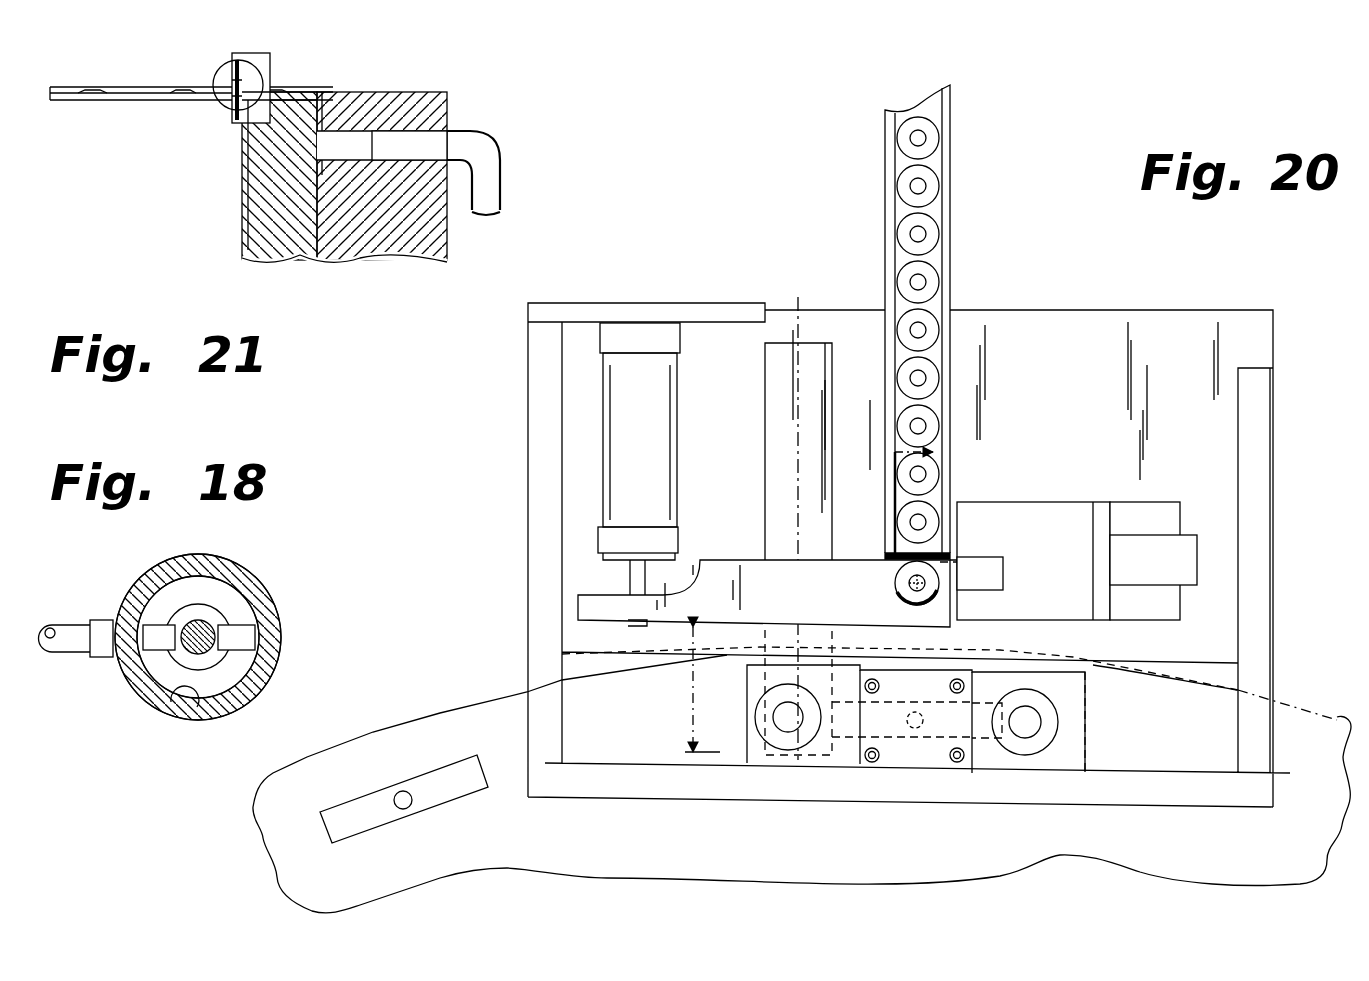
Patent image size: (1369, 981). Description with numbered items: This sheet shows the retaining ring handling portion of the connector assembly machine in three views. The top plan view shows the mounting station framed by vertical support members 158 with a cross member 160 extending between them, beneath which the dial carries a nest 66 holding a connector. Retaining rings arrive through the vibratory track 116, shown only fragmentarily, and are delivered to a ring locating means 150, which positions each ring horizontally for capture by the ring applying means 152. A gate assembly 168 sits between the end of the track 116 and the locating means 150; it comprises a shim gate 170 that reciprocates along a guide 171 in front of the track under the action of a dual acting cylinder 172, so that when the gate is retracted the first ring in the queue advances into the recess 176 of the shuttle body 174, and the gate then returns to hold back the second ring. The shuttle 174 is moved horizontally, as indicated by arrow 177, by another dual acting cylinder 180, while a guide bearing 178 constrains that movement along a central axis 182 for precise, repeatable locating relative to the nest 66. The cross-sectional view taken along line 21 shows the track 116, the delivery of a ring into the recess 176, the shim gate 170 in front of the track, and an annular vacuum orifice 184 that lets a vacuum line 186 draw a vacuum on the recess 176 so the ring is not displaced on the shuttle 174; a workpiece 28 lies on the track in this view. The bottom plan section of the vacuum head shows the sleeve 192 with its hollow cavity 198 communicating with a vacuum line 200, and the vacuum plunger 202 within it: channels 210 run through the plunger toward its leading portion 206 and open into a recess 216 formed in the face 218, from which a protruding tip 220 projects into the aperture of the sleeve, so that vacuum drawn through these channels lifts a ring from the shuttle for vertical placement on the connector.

In FIG. 20, the section line 21— 21 is at (895, 534).
In FIG. 21, the workpiece pads 28 is at (105, 99).
In FIG. 20, the nest 66 is at (412, 815).
In FIG. 21, the track 116 is at (62, 101).
In FIG. 20, the track 116 is at (950, 141).
In FIG. 20, the ring locating means 150 is at (685, 572).
In FIG. 20, the ring applying means 152 is at (1092, 750).
In FIG. 20, the vertical support members 158 is at (527, 476).
In FIG. 20, the cross member 160 is at (728, 800).
In FIG. 20, the gate assembly 168 is at (1037, 476).
In FIG. 21, the shim gate 170 is at (234, 112).
In FIG. 20, the shim gate 170 is at (855, 560).
In FIG. 21, the guide 171 is at (270, 58).
In FIG. 20, the guide 171 is at (993, 591).
In FIG. 21, the dual acting cylinder 172 is at (226, 74).
In FIG. 20, the dual acting cylinder 172 is at (1191, 536).
In FIG. 21, the shuttle body 174 is at (448, 116).
In FIG. 20, the shuttle body 174 is at (753, 558).
In FIG. 21, the recess 176 is at (328, 92).
In FIG. 20, the recess 176 is at (896, 586).
In FIG. 20, the arrow 177 is at (692, 689).
In FIG. 20, the guide bearing 178 is at (765, 386).
In FIG. 20, the dual acting cylinder 180 is at (603, 376).
In FIG. 20, the central axis 182 is at (797, 298).
In FIG. 21, the annular vacuum orifice 184 is at (250, 147).
In FIG. 21, the vacuum line 186 is at (500, 183).
In FIG. 18, the sleeve 192 is at (205, 720).
In FIG. 18, the hollow cavity 198 is at (196, 692).
In FIG. 18, the vacuum line 200 is at (95, 658).
In FIG. 18, the vacuum plunger 202 is at (232, 692).
In FIG. 18, the leading portion 206 is at (208, 625).
In FIG. 18, the channels 210 is at (165, 640).
In FIG. 18, the recess 216 is at (215, 658).
In FIG. 18, the face 218 is at (135, 596).
In FIG. 18, the protruding tip 220 is at (212, 630).